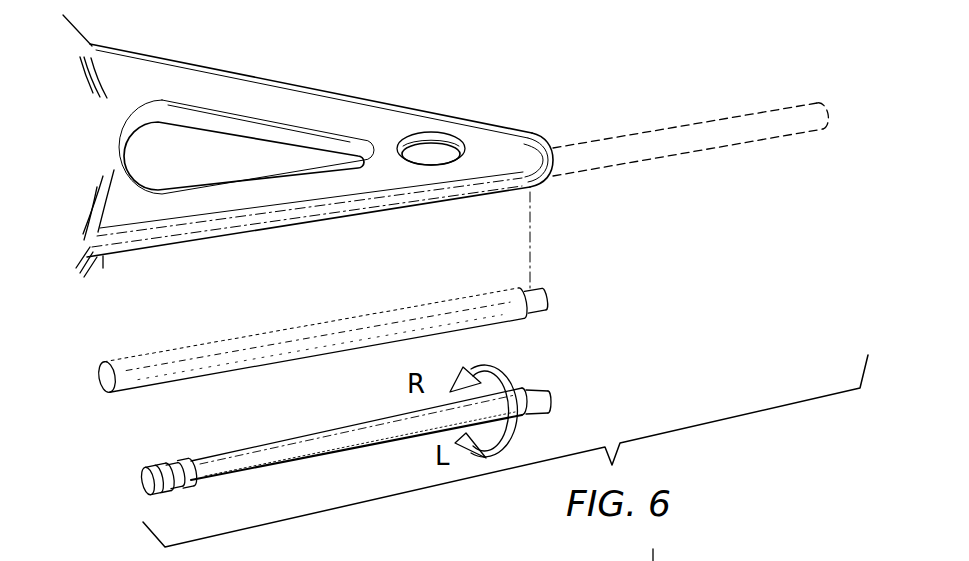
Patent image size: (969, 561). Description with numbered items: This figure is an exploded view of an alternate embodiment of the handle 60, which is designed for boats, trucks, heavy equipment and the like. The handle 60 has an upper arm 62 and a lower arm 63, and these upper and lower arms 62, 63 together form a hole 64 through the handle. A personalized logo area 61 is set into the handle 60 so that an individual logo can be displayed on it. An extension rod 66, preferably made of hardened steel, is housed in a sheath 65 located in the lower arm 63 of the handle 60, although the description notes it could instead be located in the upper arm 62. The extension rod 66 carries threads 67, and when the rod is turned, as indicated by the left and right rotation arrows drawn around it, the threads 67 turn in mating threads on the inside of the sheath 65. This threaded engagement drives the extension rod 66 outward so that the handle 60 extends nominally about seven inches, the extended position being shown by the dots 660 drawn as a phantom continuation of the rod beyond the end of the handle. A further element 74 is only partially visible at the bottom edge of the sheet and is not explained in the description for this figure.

The handle 60 is at (320, 148).
The personalized logo area 61 is at (440, 153).
The upper arm 62 is at (147, 90).
The lower arm 63 is at (143, 202).
The hole 64 is at (229, 167).
The sheath 65 is at (487, 293).
The extension rod 66 is at (543, 294).
The threads 67 is at (164, 464).
The dots 660 is at (753, 115).
The element 74 is at (693, 553).